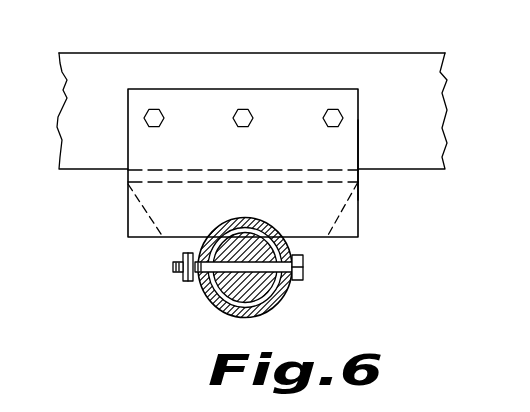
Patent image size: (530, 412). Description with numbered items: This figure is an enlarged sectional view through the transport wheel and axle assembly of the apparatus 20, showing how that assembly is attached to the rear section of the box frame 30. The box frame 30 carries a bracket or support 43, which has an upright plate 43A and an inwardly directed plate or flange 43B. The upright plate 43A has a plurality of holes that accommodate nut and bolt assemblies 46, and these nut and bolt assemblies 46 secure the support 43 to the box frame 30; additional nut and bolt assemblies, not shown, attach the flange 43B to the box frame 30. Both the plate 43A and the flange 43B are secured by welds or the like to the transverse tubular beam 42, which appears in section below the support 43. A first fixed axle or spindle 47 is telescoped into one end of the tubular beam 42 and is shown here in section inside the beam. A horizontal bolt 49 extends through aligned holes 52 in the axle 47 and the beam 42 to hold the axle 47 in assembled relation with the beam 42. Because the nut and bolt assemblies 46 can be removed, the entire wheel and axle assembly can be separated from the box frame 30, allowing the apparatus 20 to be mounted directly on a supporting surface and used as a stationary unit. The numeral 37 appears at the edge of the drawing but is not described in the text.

The apparatus 20 is at (8, 96).
The box frame 30 is at (82, 144).
The frame member 37 is at (17, 269).
The transverse tubular beam 42 is at (287, 293).
The support 43 is at (138, 140).
The upright plate 43A is at (348, 133).
The inwardly directed flange 43B is at (322, 182).
The nut and bolt assemblies 46 is at (157, 114).
The first fixed axle 47 is at (252, 285).
The horizontal bolt 49 is at (182, 272).
The aligned holes 52 is at (195, 279).